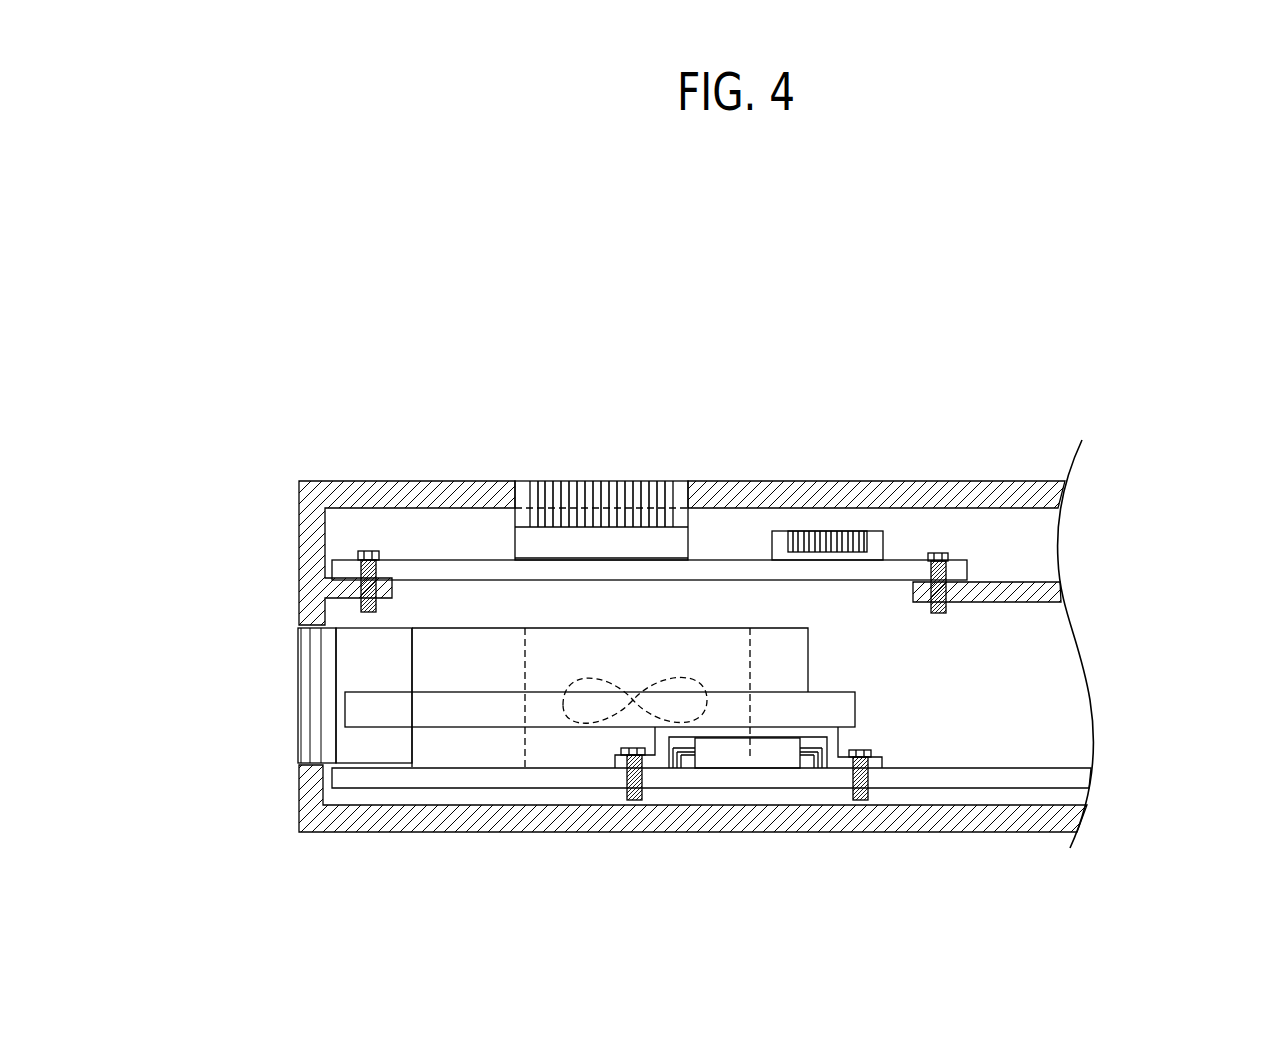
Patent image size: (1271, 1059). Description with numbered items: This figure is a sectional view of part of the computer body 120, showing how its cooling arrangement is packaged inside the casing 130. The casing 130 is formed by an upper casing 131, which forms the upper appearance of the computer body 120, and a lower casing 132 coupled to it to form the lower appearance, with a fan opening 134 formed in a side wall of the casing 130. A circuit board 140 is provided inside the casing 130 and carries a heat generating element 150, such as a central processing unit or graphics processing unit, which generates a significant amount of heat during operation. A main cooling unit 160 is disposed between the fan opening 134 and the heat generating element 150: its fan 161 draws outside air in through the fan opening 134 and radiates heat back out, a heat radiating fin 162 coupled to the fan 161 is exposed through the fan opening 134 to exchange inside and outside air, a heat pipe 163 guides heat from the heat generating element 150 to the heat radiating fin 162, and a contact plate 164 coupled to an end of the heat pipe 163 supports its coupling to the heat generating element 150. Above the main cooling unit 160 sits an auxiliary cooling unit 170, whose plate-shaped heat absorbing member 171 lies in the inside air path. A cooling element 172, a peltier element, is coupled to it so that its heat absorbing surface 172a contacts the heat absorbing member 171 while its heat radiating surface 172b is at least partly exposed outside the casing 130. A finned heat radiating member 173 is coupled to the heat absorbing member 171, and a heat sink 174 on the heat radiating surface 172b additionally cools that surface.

The computer body 120 is at (378, 348).
The casing 130 is at (1168, 510).
The upper casing 131 is at (1047, 493).
The lower casing 132 is at (1065, 793).
The fan opening 134 is at (297, 762).
The circuit board 140 is at (957, 780).
The heat generating element 150 is at (772, 760).
The main cooling unit 160 is at (662, 922).
The fan 161 is at (487, 749).
The heat radiating fin 162 is at (380, 749).
The heat pipe 163 is at (548, 713).
The contact plate 164 is at (662, 760).
The auxiliary cooling unit 170 is at (835, 358).
The heat absorbing member 171 is at (452, 572).
The cooling element 172 is at (617, 403).
The heat absorbing surface 172a is at (550, 563).
The heat radiating surface 172b is at (612, 533).
The heat radiating member 173 is at (815, 532).
The heat sink 174 is at (650, 497).